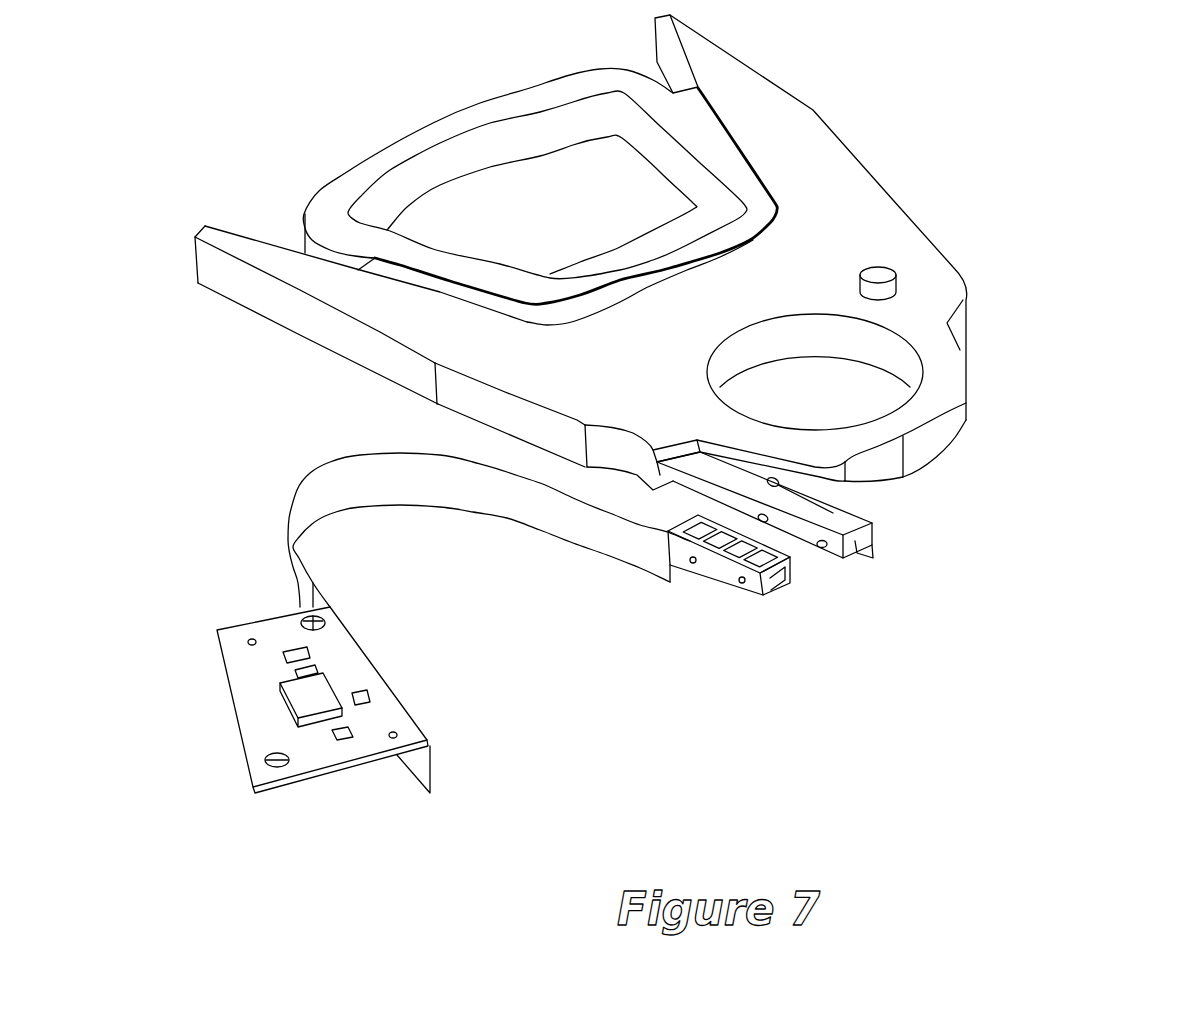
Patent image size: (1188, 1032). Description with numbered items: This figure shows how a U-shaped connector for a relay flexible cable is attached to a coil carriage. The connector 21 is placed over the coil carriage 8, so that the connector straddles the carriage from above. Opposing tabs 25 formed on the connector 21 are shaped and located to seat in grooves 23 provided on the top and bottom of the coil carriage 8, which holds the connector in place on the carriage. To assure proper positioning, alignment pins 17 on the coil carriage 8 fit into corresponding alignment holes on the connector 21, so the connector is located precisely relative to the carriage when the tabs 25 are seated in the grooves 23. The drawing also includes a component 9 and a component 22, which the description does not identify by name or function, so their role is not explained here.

The coil carriage 8 is at (947, 373).
The ribbon cable 9 is at (352, 480).
The alignment pins 17 is at (821, 549).
The connector 21 is at (752, 592).
The connector pins 22 is at (865, 557).
The grooves 23 is at (857, 541).
The opposing tabs 25 is at (767, 523).